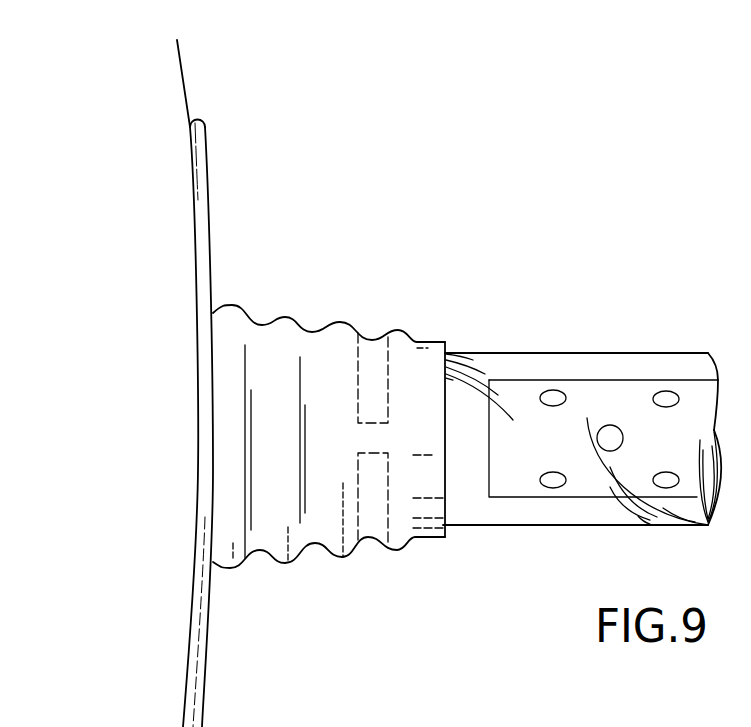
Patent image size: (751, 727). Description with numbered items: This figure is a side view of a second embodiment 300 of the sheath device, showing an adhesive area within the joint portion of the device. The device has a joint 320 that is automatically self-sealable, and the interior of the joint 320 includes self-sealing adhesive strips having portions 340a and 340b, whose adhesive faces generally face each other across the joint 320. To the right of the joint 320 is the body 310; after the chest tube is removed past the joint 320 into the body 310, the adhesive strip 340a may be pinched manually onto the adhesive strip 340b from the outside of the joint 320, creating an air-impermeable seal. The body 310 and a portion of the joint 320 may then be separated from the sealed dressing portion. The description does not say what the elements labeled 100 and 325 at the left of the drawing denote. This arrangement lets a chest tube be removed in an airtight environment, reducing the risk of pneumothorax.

The strip / flexible member 100 is at (168, 409).
The end cap of strip 325 is at (203, 172).
The second embodiment of the sheath device 300 is at (551, 195).
The joint 320 is at (383, 287).
The adhesive strip portion 340a is at (375, 380).
The adhesive strip portion 340b is at (373, 498).
The body 310 is at (615, 368).